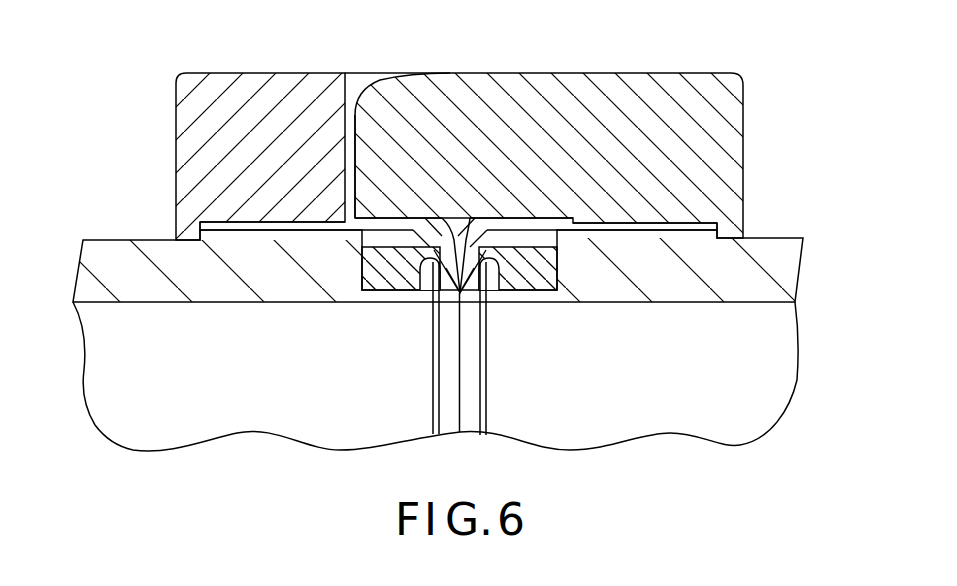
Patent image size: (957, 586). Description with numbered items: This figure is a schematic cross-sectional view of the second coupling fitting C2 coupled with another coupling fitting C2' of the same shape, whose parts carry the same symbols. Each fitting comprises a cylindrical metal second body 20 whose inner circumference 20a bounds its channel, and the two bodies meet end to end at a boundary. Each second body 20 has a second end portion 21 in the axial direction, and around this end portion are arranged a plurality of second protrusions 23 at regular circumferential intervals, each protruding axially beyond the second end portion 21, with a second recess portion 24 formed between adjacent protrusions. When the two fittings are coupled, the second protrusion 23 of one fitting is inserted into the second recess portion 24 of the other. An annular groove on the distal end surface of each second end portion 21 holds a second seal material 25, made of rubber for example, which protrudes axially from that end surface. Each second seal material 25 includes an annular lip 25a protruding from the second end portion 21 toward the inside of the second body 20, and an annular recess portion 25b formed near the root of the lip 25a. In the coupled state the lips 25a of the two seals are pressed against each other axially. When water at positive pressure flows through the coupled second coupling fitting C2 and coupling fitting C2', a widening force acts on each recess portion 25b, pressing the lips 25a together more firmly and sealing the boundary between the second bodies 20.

The second body 20 is at (108, 250).
The inner circumference 20a is at (215, 303).
The second end portion 21 is at (437, 212).
The second protrusion 23 is at (600, 73).
The second recess portion 24 is at (350, 90).
The second seal material 25 is at (382, 288).
The lip 25a is at (437, 306).
The recess portion 25b is at (402, 226).
The second coupling fitting C2 is at (101, 111).
The coupling fitting of the same shape C2' is at (808, 115).